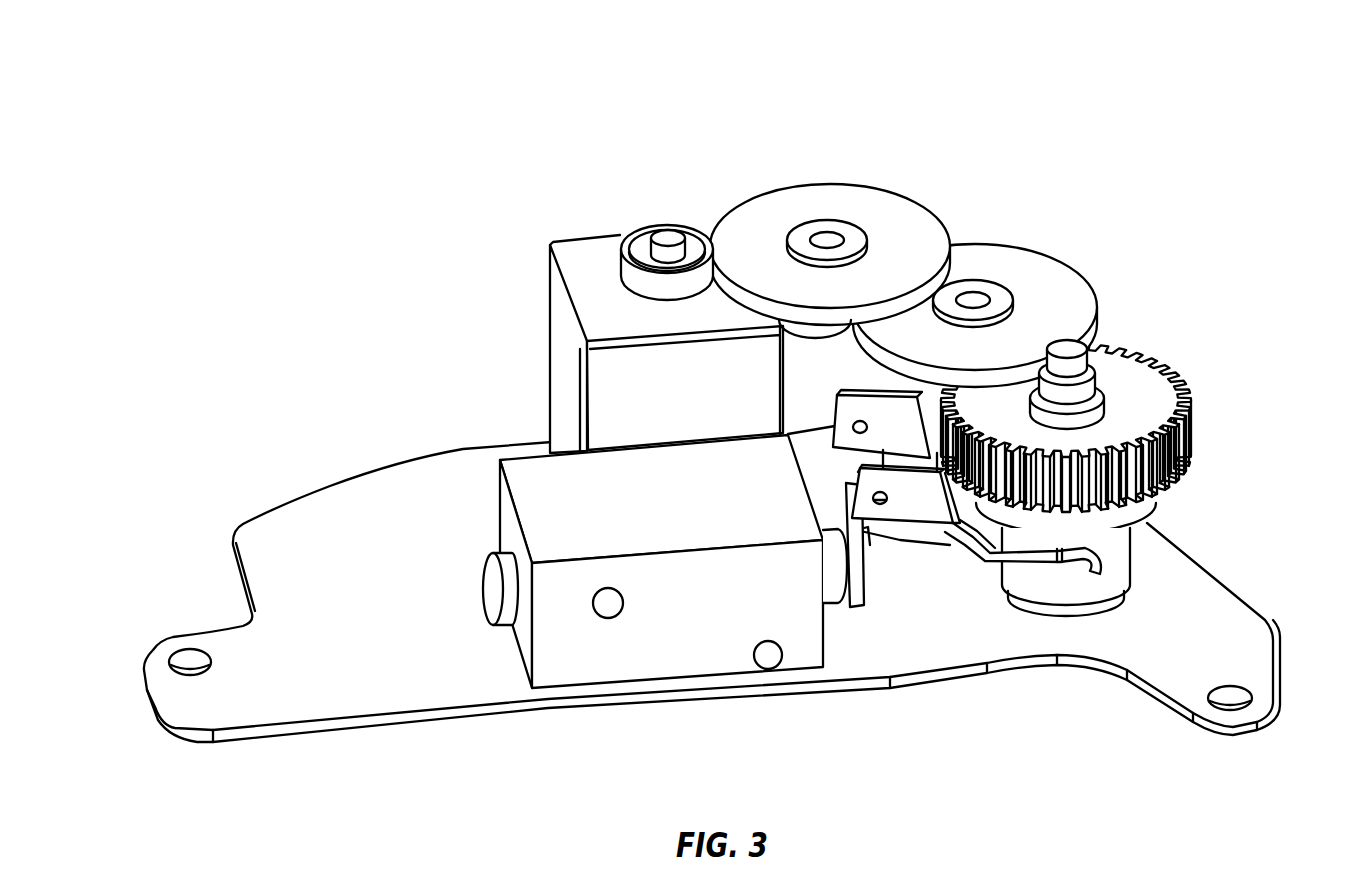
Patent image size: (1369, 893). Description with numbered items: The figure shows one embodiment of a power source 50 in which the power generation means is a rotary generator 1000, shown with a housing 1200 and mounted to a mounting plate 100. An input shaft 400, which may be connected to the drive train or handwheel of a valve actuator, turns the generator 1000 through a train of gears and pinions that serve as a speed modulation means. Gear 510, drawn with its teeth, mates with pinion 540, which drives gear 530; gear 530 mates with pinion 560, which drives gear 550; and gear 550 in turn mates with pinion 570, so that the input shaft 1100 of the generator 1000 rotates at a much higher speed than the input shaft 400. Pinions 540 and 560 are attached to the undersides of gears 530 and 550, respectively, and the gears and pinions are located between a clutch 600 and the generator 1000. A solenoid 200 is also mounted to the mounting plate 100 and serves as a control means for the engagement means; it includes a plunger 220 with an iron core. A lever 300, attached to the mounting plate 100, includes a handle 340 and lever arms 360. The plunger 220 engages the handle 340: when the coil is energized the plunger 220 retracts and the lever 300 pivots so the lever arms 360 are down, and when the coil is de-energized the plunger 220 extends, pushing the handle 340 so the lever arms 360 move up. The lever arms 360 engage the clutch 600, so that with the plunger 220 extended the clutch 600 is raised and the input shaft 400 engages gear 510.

The power source 50 is at (1128, 124).
The mounting plate 100 is at (310, 537).
The solenoid 200 is at (665, 614).
The plunger 220 is at (833, 586).
The lever 300 is at (907, 507).
The handle 340 is at (858, 592).
The lever arms 360 is at (997, 547).
The input shaft 400 is at (1072, 384).
The gear 510 is at (1140, 410).
The gear 530 is at (1057, 290).
The pinion 540 is at (937, 397).
The gear 550 is at (870, 207).
The pinion 560 is at (823, 330).
The pinion 570 is at (627, 233).
The clutch 600 is at (1138, 513).
The generator 1000 is at (570, 355).
The input shaft 1100 is at (672, 233).
The housing 1200 is at (602, 308).